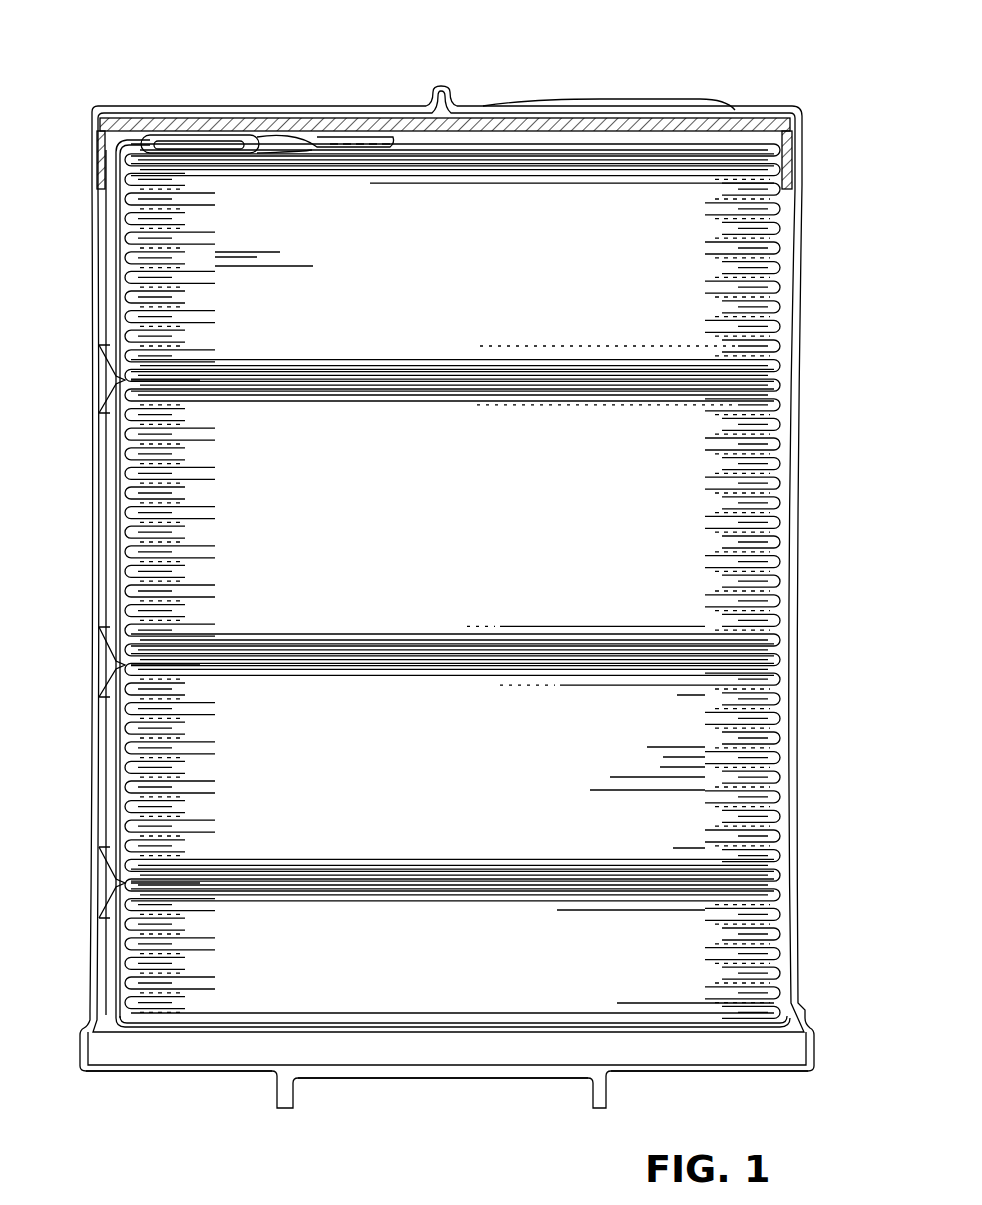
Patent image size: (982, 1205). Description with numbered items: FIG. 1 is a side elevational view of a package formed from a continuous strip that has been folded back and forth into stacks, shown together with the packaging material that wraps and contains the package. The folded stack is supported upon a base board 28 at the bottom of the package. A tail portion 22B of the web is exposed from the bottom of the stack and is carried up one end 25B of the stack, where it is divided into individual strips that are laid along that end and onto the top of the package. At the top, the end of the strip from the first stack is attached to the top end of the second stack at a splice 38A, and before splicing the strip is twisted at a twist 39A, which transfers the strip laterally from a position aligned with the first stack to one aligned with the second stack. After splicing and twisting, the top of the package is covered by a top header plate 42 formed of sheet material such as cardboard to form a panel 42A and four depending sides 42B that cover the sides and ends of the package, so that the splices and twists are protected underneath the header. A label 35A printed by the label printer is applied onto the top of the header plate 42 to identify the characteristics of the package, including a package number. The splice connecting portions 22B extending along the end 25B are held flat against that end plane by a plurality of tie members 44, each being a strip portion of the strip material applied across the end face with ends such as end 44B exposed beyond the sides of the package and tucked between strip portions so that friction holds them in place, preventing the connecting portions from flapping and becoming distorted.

The top header plate 42 is at (152, 106).
The panel 42A is at (733, 114).
The depending sides 42B is at (798, 142).
The label 35A is at (617, 106).
The twist 39A is at (207, 135).
The splice 38A is at (352, 140).
The tail portion of the web 22B is at (100, 458).
The end of the stack 25B is at (125, 553).
The tie members 44 is at (108, 380).
The end of the tie member 44B is at (123, 367).
The base board 28 is at (494, 1052).